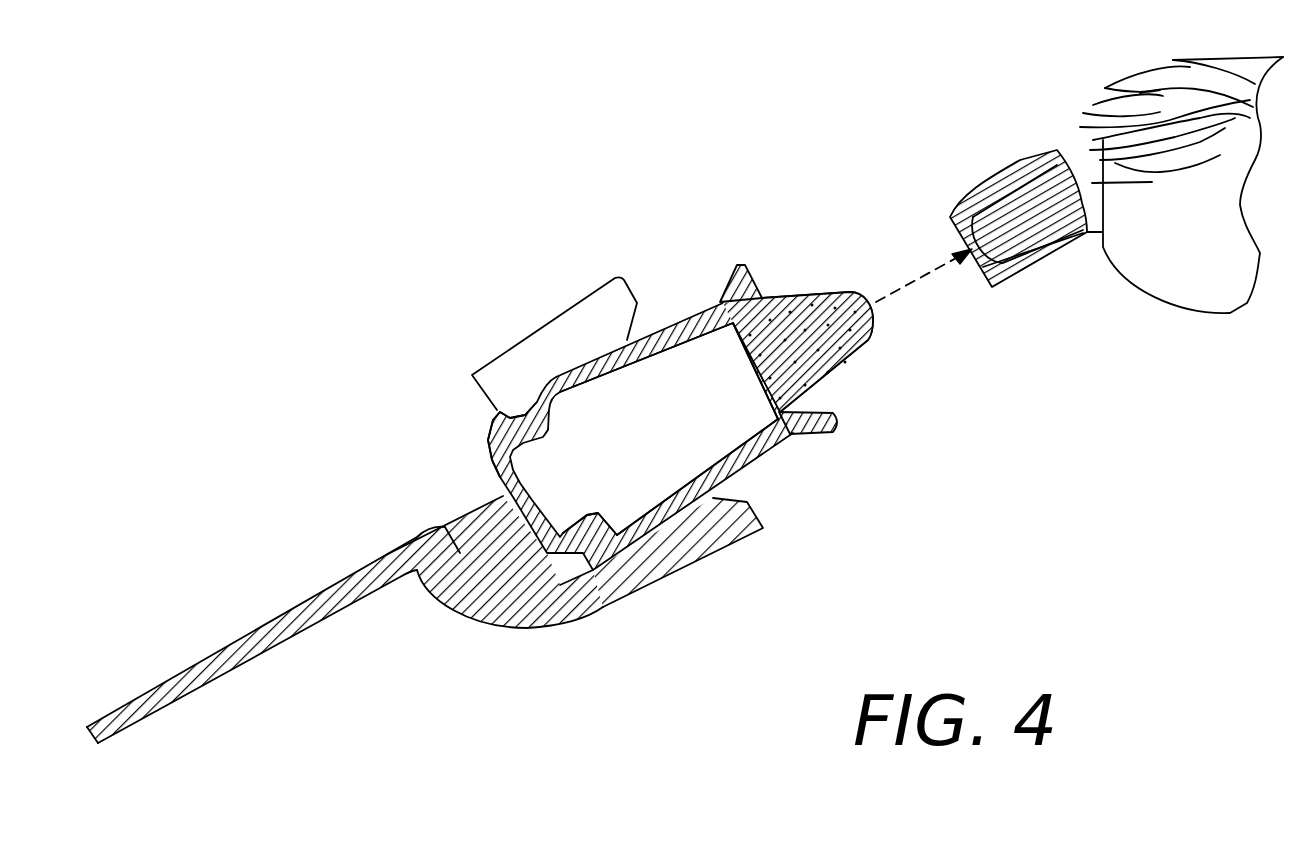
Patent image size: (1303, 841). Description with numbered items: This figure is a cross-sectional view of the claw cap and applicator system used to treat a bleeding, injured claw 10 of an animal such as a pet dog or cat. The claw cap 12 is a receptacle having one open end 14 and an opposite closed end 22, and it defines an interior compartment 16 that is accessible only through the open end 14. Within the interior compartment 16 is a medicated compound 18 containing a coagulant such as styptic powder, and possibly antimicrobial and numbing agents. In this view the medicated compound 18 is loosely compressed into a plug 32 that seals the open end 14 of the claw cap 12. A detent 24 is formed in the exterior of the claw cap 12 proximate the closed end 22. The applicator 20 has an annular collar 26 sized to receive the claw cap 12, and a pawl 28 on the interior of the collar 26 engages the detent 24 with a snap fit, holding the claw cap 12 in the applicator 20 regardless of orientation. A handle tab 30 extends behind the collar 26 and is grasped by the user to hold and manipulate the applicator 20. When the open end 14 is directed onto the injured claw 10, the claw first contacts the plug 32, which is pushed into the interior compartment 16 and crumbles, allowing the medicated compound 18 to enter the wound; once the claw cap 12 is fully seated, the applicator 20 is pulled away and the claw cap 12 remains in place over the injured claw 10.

The injured claw 10 is at (1010, 165).
The claw cap 12 is at (677, 317).
The open end 14 is at (840, 410).
The interior compartment 16 is at (660, 405).
The medicated compound 18 is at (840, 357).
The applicator 20 is at (488, 604).
The closed end 22 is at (497, 474).
The detent 24 is at (525, 413).
The annular collar 26 is at (680, 547).
The pawl 28 is at (605, 540).
The handle tab 30 is at (250, 640).
The plug 32 is at (800, 293).